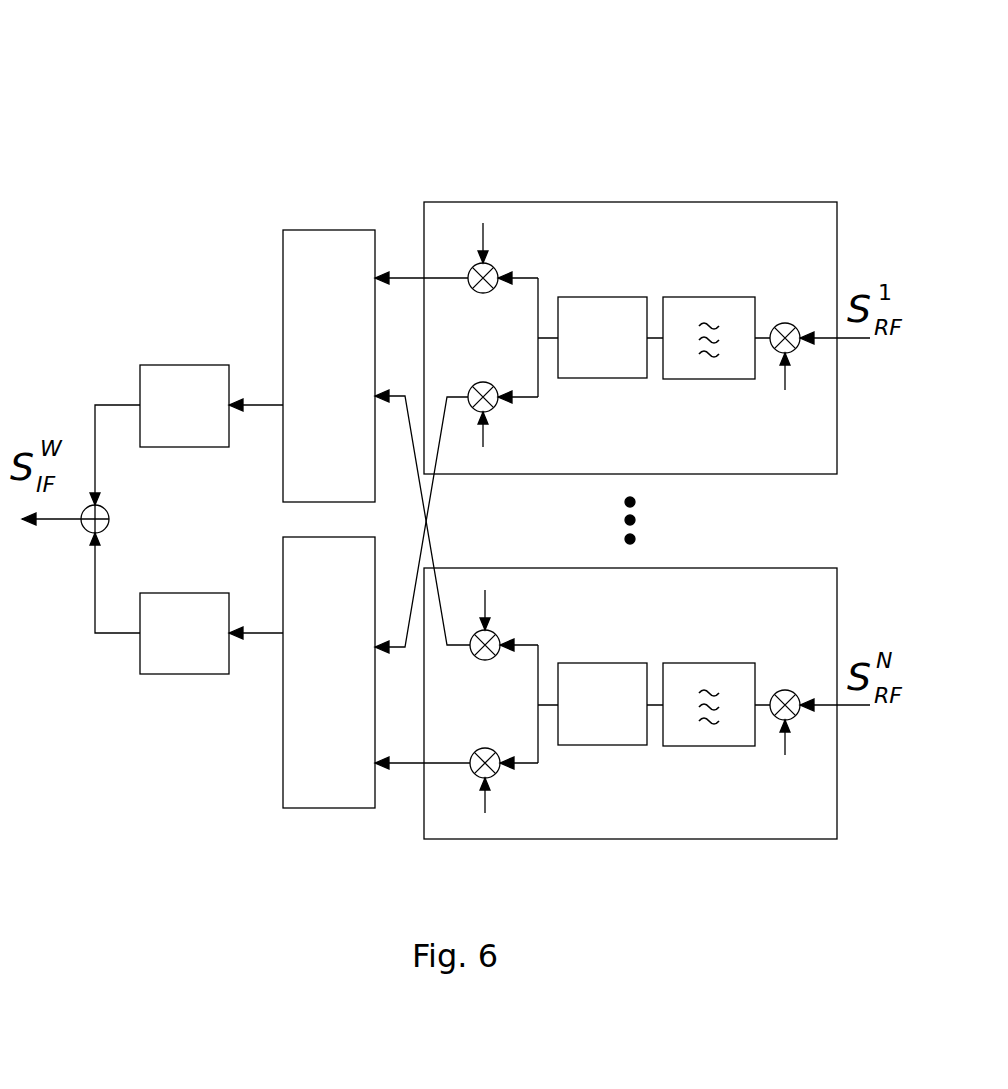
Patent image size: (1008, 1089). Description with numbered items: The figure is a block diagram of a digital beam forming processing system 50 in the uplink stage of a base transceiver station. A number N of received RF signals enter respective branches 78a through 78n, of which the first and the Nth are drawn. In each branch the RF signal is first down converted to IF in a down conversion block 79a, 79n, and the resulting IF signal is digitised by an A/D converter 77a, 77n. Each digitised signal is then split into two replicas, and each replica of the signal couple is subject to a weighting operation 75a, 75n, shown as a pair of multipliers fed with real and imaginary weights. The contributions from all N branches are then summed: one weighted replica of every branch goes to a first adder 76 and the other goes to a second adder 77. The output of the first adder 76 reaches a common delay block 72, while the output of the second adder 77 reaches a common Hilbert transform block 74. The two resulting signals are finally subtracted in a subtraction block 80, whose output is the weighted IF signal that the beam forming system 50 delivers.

The receiver / signal processing system 50 is at (198, 137).
The delay block 72 is at (177, 383).
The Hilbert transform block 74 is at (166, 653).
The weighting operation 75a is at (455, 247).
The weighting operation 75n is at (445, 790).
The first adder 76 is at (337, 248).
The second adder 77 is at (315, 790).
The A/D converter 77a is at (588, 305).
The A/D converter 77n is at (588, 672).
The branch 78a is at (657, 215).
The branch 78n is at (685, 823).
The down conversion block 79a is at (788, 323).
The down conversion block 79n is at (788, 690).
The subtraction block 80 is at (109, 522).